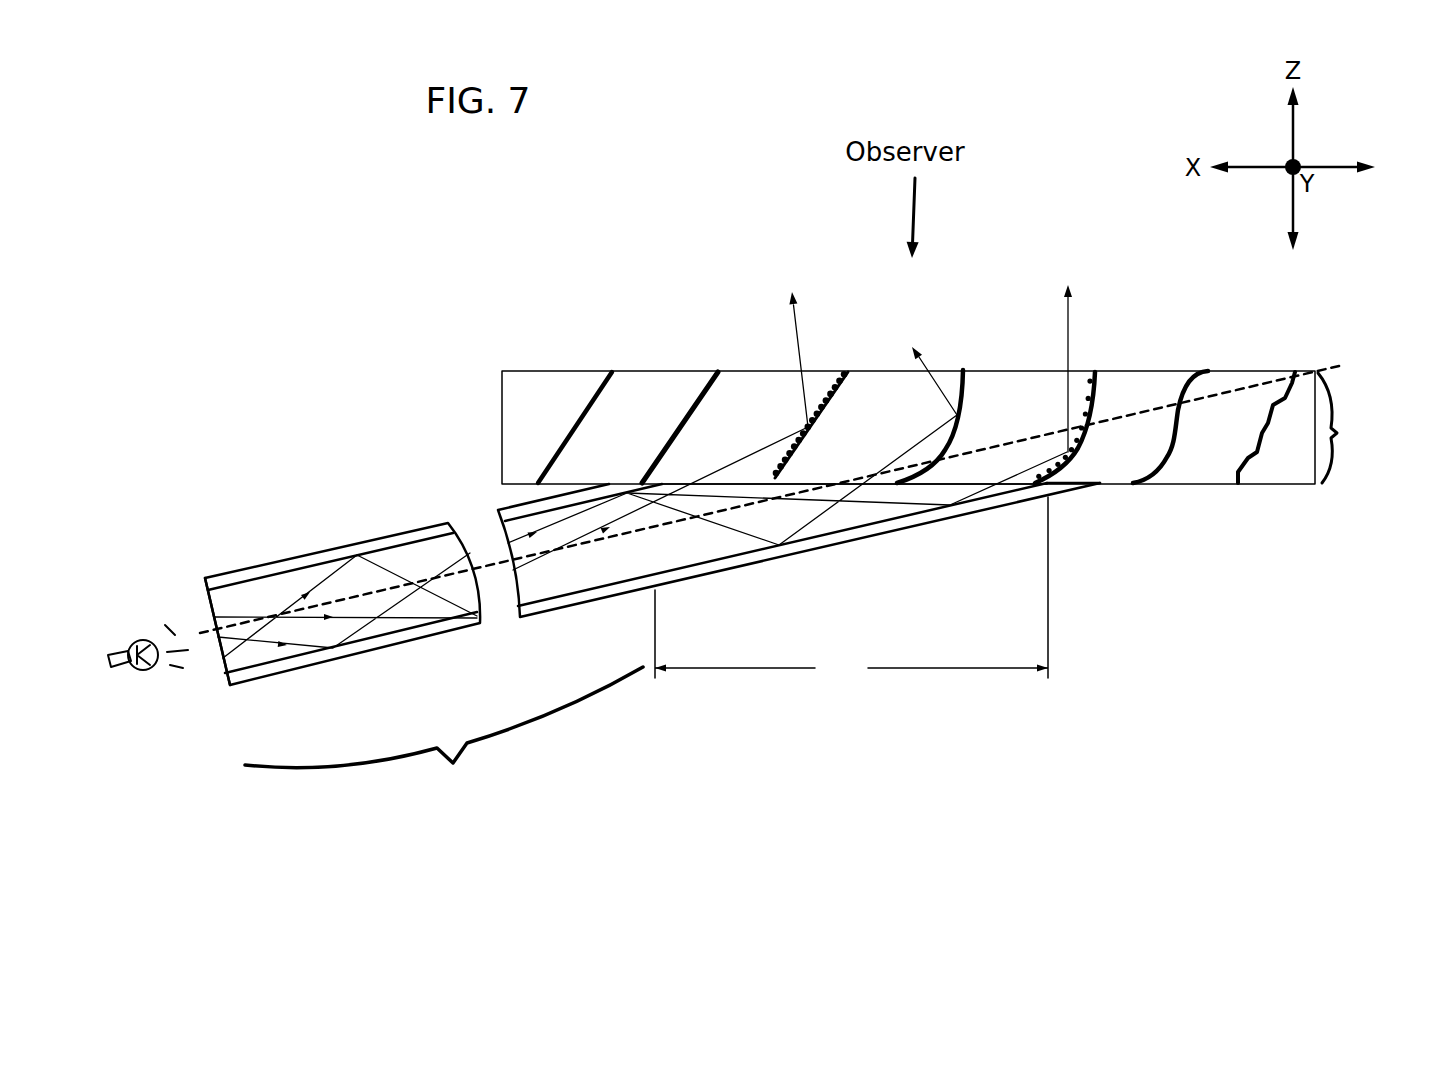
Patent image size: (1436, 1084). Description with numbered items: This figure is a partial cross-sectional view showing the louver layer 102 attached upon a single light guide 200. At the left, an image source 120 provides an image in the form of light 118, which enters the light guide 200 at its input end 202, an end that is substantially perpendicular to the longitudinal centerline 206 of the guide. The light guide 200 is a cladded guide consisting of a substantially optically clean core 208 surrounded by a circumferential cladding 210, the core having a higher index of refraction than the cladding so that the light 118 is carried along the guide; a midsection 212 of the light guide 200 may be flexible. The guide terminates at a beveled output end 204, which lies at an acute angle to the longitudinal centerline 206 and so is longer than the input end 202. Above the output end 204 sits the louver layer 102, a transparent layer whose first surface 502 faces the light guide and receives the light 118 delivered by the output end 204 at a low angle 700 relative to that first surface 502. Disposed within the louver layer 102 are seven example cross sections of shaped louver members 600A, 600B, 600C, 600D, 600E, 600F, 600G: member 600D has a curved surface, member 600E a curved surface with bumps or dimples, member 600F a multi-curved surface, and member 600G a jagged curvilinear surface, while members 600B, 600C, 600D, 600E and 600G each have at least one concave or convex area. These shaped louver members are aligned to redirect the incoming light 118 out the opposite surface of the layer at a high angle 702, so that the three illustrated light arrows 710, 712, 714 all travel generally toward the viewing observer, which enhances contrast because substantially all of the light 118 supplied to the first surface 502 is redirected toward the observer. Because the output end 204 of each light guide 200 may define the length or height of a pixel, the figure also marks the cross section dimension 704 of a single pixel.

The louver layer 102 is at (1345, 428).
The light 118 is at (172, 670).
The image source 120 is at (138, 638).
The light guide 200 is at (352, 531).
The input end 202 is at (227, 667).
The output end 204 is at (735, 485).
The longitudinal centerline 206 is at (375, 688).
The core 208 is at (390, 577).
The circumferential cladding 210 is at (208, 580).
The midsection 212 is at (444, 736).
The first surface 502 is at (1113, 485).
The shaped louver member 600A is at (560, 446).
The shaped louver member 600B is at (690, 405).
The shaped louver member 600C is at (823, 398).
The shaped louver member 600D is at (965, 405).
The shaped louver member 600E is at (1118, 388).
The shaped louver member 600F is at (1160, 468).
The shaped louver member 600G is at (1257, 452).
The low angle 700 is at (957, 483).
The high angle 702 is at (1082, 370).
The cross section dimension 704 is at (851, 588).
The light arrow 710 is at (791, 346).
The light arrow 712 is at (918, 371).
The light arrow 714 is at (1062, 357).